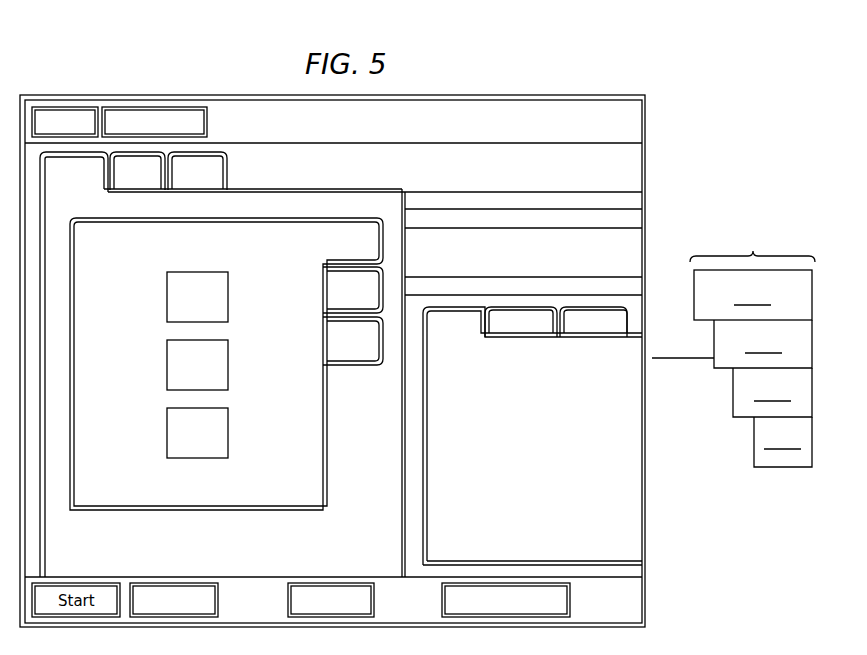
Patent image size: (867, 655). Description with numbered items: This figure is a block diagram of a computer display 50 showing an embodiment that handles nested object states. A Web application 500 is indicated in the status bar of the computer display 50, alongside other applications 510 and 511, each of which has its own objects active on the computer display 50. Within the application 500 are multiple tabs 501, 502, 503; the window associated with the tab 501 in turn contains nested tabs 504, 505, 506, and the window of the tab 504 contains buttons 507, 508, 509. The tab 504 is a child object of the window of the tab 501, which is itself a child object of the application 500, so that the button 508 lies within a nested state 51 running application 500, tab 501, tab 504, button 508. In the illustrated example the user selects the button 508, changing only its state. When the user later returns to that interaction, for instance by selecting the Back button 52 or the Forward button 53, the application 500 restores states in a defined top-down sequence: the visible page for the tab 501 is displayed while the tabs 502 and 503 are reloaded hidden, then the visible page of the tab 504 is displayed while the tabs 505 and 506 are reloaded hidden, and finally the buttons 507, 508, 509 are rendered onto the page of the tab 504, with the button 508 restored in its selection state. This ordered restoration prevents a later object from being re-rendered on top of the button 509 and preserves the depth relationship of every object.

The computer display 50 is at (610, 72).
The nested state 51 is at (733, 322).
The Back button 52 is at (65, 105).
The Forward button 53 is at (152, 105).
The application 500 is at (570, 600).
The tab 501 is at (93, 183).
The tab 502 is at (156, 183).
The tab 503 is at (215, 183).
The tab 504 is at (370, 253).
The tab 505 is at (370, 302).
The tab 506 is at (370, 352).
The button 507 is at (216, 307).
The button 508 is at (216, 375).
The button 509 is at (216, 443).
The application 510 is at (218, 600).
The application 511 is at (374, 600).